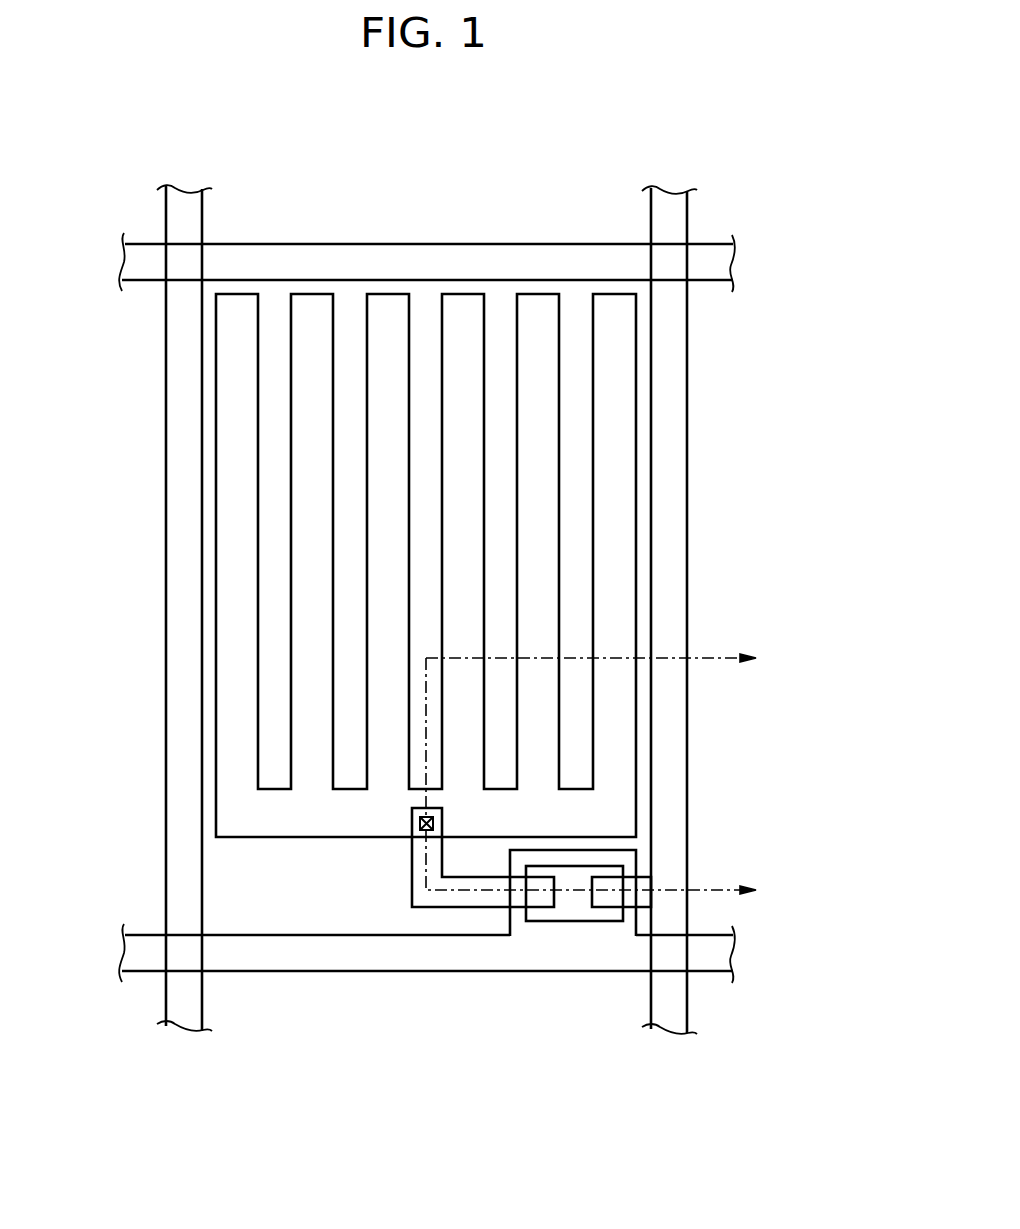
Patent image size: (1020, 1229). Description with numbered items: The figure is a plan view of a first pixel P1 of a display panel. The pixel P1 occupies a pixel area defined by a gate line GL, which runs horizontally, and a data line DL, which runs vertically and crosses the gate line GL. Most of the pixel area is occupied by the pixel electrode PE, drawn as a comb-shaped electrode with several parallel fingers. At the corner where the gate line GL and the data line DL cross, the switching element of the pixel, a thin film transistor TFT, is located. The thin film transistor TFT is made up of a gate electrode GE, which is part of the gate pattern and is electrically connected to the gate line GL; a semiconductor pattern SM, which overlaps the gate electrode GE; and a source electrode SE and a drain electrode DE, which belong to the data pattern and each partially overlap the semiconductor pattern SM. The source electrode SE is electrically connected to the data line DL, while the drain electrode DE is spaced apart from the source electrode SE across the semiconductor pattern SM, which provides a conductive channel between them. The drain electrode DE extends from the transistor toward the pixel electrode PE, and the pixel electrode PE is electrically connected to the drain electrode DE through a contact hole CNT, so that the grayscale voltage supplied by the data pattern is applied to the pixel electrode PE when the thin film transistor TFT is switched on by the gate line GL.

The first pixel P1 is at (460, 205).
The data line DL is at (667, 200).
The gate line GL is at (735, 266).
The pixel electrode PE is at (636, 751).
The contact hole CNT is at (418, 822).
The thin film transistor TFT is at (620, 1040).
The drain electrode DE is at (472, 909).
The gate electrode GE is at (511, 926).
The semiconductor pattern SM is at (566, 921).
The source electrode SE is at (603, 908).